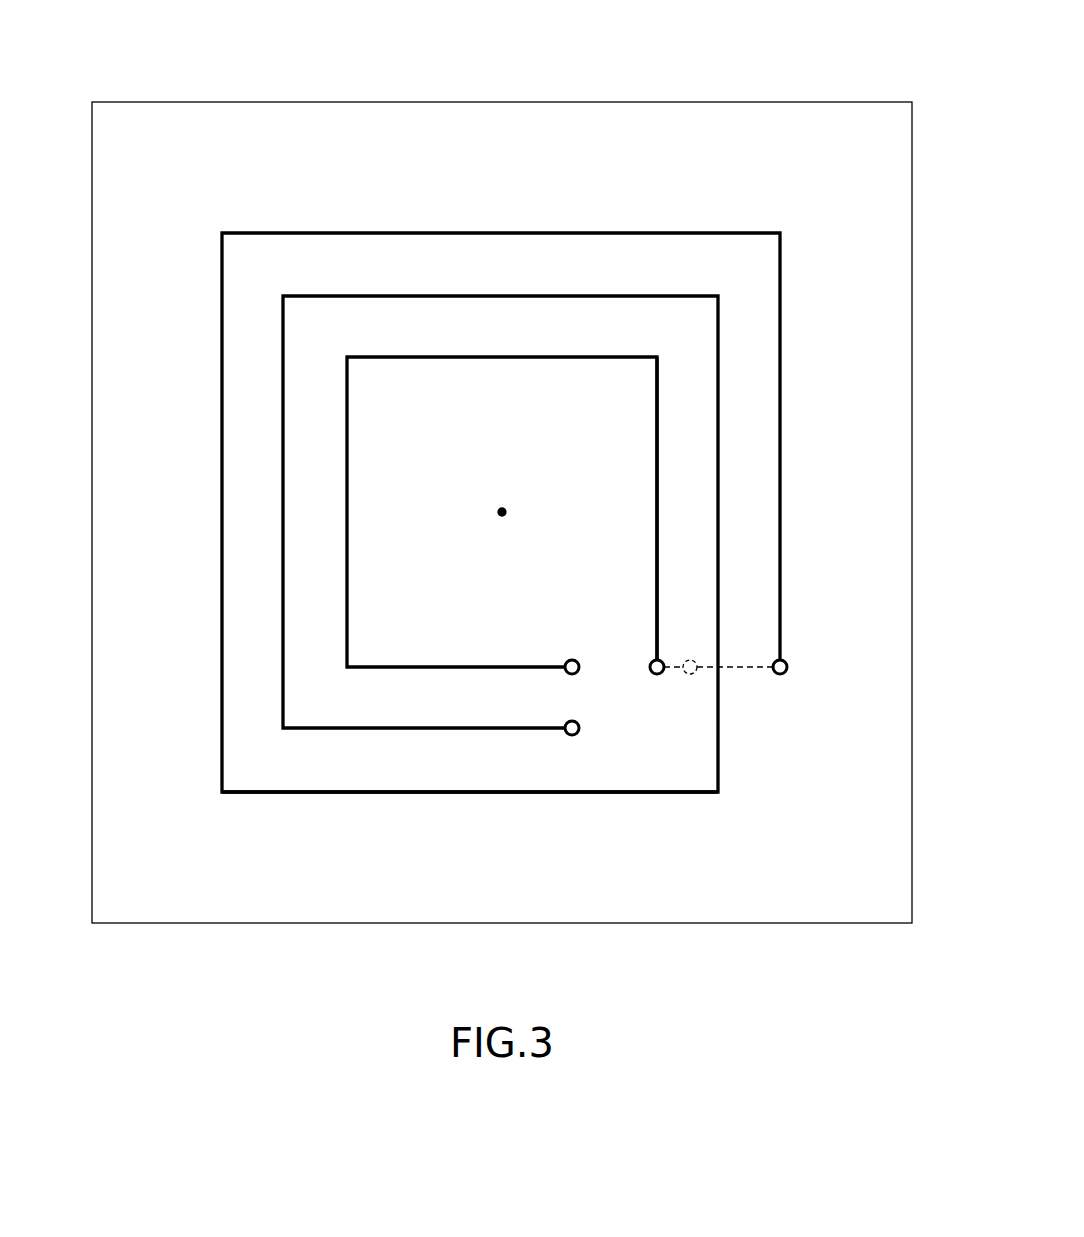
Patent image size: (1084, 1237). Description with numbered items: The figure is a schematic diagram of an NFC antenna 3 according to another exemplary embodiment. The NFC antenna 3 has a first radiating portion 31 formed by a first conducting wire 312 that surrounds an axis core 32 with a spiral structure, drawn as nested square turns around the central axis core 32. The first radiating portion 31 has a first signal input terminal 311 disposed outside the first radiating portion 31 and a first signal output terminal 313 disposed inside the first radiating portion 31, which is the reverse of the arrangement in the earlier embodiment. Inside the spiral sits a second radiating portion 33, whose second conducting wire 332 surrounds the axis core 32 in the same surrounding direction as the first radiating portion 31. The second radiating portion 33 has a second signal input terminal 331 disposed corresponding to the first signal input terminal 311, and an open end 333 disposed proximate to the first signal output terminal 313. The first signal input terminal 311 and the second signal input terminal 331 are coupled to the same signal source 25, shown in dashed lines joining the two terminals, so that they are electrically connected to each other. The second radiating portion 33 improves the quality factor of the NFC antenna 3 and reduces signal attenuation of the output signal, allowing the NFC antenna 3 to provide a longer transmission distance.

The NFC antenna 3 is at (116, 44).
The first radiating portion 31 is at (504, 573).
The first signal input terminal 311 is at (780, 674).
The first conducting wire 312 is at (570, 793).
The first signal output terminal 313 is at (577, 733).
The axis core 32 is at (502, 508).
The second radiating portion 33 is at (625, 515).
The second signal input terminal 331 is at (662, 661).
The second conducting wire 332 is at (657, 492).
The open end 333 is at (577, 661).
The signal source 25 is at (690, 674).